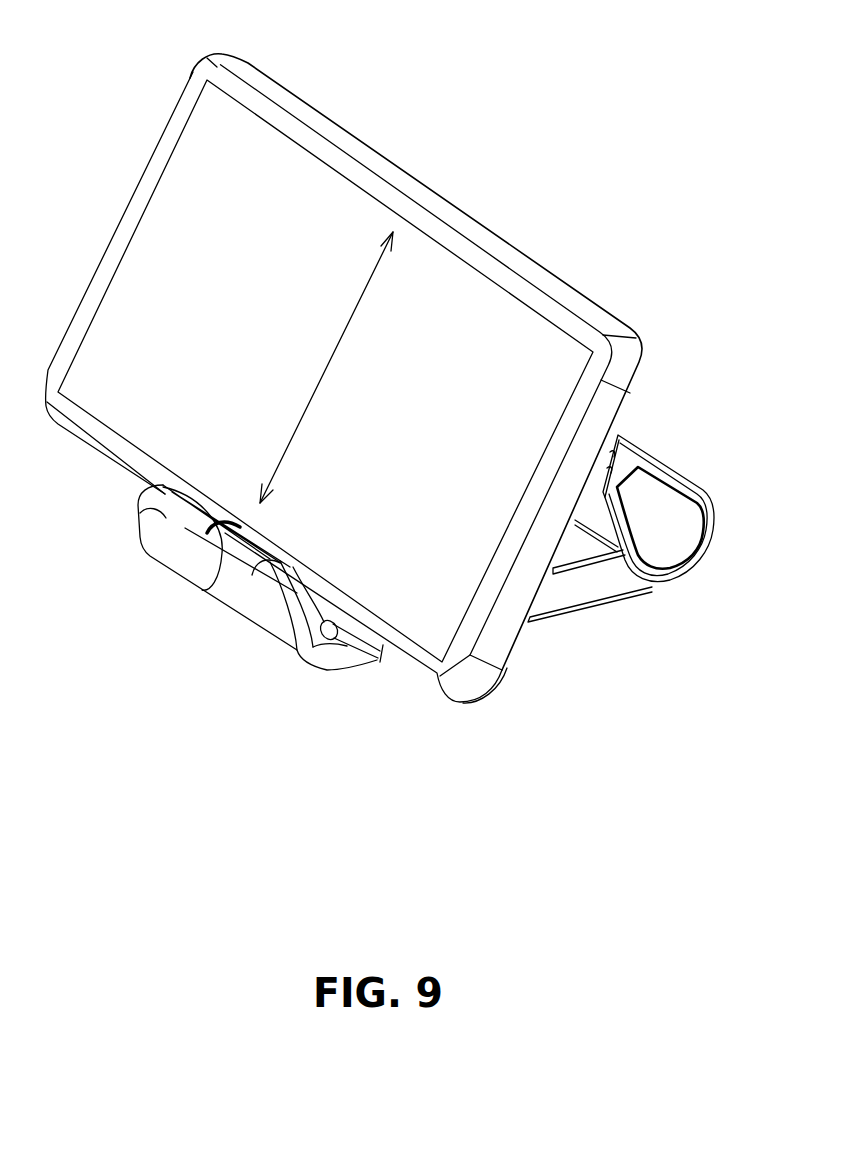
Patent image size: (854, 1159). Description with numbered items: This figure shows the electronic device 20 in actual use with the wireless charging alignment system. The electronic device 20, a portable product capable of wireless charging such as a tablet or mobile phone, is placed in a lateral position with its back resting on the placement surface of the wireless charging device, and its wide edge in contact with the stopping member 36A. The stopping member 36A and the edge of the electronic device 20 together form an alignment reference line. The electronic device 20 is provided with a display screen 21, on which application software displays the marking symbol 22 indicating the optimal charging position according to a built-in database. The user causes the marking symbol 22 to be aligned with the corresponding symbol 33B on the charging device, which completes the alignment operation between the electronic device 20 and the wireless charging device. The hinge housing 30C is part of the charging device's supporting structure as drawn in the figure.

The electronic device 20 is at (177, 127).
The display screen 21 is at (187, 280).
The marking symbol 22 is at (328, 368).
The stopping member 36A is at (173, 517).
The corresponding symbol 33B is at (203, 589).
The hinge housing 30C is at (685, 542).